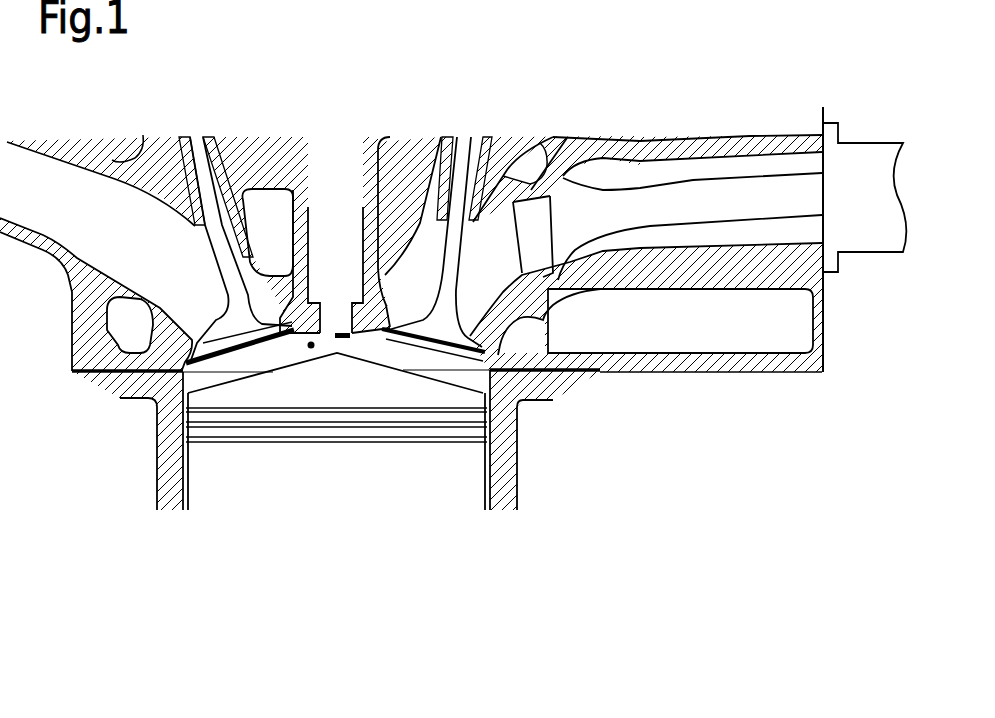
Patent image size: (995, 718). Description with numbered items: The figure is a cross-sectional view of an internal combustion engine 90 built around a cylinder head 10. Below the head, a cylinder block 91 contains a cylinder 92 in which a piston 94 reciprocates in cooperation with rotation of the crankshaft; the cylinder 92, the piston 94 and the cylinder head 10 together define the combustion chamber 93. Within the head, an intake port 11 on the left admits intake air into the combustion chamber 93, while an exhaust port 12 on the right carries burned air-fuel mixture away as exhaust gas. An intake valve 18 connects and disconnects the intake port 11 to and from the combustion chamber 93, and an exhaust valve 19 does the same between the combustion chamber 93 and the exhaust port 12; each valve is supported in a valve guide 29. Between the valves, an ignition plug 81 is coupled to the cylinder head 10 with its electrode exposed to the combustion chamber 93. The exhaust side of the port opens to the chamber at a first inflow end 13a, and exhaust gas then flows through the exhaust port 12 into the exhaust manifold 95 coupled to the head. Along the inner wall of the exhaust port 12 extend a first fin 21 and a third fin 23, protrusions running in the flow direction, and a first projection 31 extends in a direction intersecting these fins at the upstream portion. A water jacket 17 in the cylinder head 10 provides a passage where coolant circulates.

The cylinder head 10 is at (696, 388).
The intake port 11 is at (62, 165).
The exhaust port 12 is at (682, 163).
The first inflow end 13a is at (392, 318).
The water jacket 17 is at (646, 307).
The intake valve 18 is at (218, 282).
The exhaust valve 19 is at (448, 285).
The first fin 21 is at (725, 172).
The third fin 23 is at (752, 227).
The valve guide 29 is at (186, 195).
The first projection 31 is at (548, 215).
The ignition plug 81 is at (335, 233).
The internal combustion engine 90 is at (416, 113).
The cylinder block 91 is at (517, 490).
The cylinder 92 is at (185, 478).
The combustion chamber 93 is at (312, 349).
The piston 94 is at (470, 460).
The exhaust manifold 95 is at (871, 151).